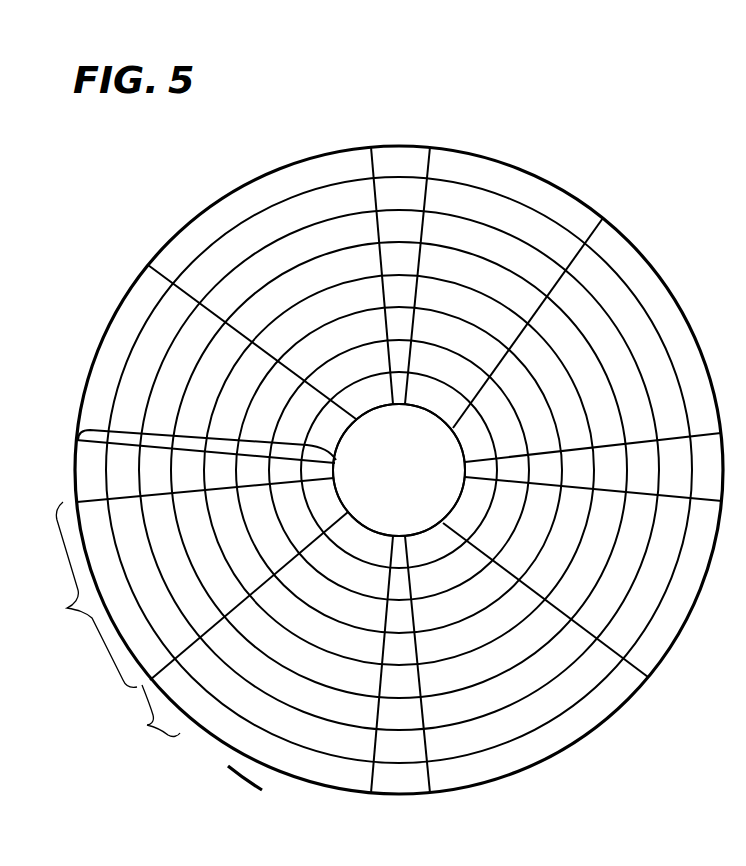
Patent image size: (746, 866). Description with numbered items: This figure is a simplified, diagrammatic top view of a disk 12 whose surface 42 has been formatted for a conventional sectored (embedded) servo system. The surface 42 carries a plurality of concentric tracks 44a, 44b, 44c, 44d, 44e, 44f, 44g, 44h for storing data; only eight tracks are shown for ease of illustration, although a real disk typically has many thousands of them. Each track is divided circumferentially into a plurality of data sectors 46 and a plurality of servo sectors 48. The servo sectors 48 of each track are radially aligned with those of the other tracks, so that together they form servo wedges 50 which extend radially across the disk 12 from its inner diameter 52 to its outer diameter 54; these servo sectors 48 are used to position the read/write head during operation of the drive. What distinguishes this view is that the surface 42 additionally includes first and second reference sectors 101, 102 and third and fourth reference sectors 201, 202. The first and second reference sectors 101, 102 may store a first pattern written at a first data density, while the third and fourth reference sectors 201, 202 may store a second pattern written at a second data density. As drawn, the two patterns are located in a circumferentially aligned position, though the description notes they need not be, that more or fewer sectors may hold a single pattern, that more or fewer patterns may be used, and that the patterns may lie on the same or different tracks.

The disk 12 is at (117, 313).
The surface 42 is at (305, 226).
The concentric track 44a is at (575, 727).
The concentric track 44b is at (537, 713).
The concentric track 44c is at (503, 690).
The concentric track 44d is at (463, 673).
The concentric track 44e is at (482, 312).
The concentric track 44f is at (530, 417).
The concentric track 44g is at (500, 522).
The concentric track 44h is at (428, 543).
The data sector 46 is at (67, 608).
The servo sector 48 is at (147, 725).
The servo wedge 50 is at (212, 437).
The inner diameter 52 is at (340, 493).
The outer diameter 54 is at (243, 756).
The first reference sector 101 is at (323, 501).
The third reference sector 201 is at (294, 515).
The second reference sector 102 is at (367, 546).
The fourth reference sector 202 is at (355, 577).